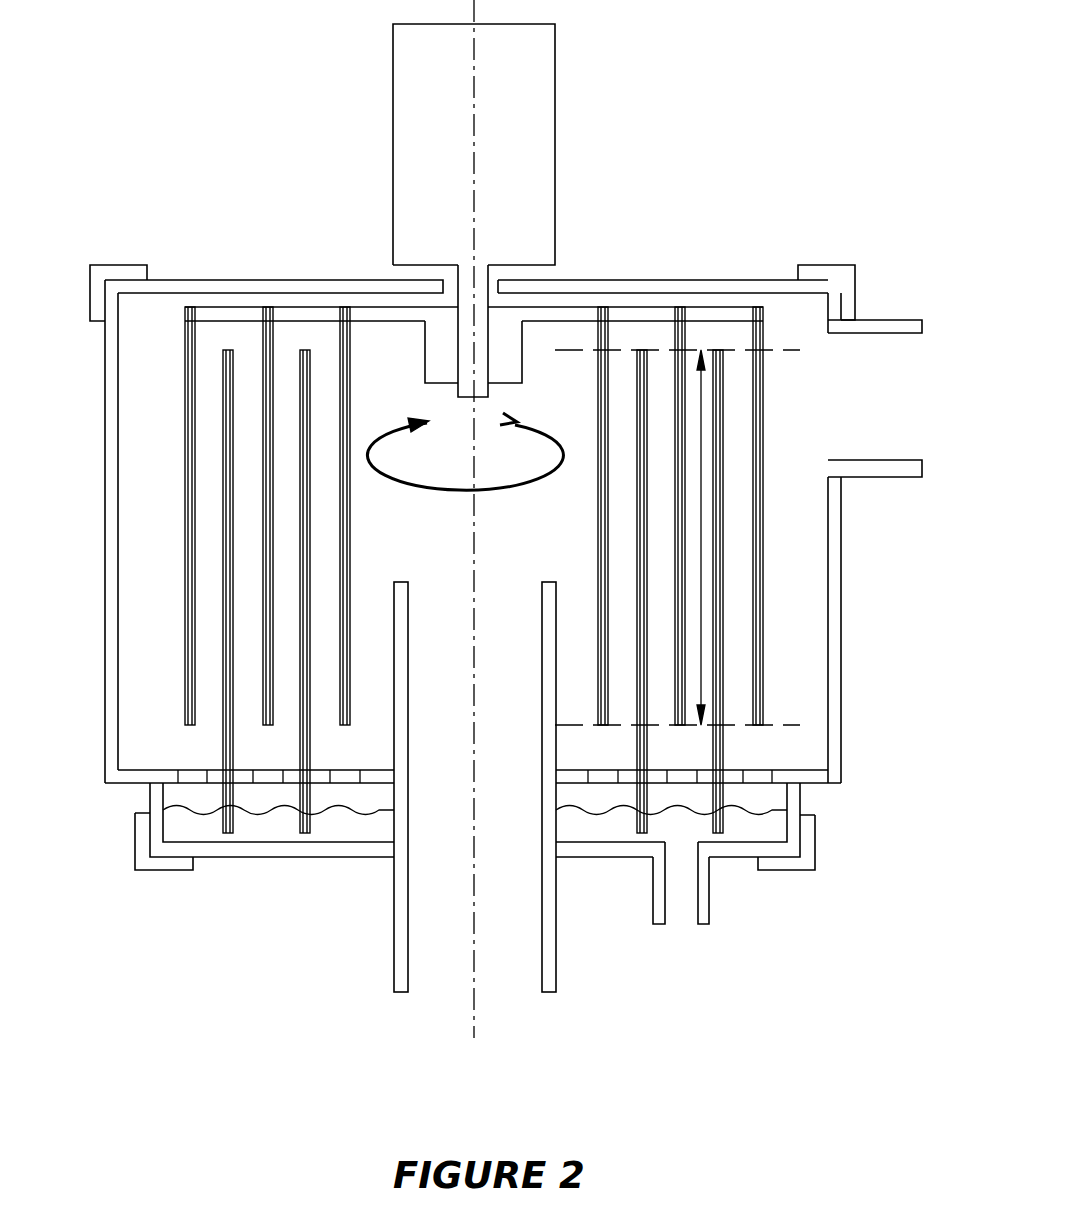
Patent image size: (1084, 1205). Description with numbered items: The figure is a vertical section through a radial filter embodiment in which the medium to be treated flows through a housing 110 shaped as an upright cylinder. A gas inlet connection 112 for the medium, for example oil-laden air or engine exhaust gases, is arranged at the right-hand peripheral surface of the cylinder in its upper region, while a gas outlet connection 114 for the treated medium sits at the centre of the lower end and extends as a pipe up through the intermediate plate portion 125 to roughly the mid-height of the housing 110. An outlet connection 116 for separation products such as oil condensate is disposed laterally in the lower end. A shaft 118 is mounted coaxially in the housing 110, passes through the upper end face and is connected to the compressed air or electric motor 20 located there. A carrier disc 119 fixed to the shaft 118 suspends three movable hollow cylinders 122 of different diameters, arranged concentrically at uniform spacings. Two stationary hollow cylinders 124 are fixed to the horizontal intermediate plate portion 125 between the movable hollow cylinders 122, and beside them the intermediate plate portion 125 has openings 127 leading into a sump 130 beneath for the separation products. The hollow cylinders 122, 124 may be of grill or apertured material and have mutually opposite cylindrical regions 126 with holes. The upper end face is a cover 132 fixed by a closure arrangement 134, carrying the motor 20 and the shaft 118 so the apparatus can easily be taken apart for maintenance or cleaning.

The motor 20 is at (523, 128).
The housing 110 is at (107, 650).
The gas inlet connection 112 is at (878, 398).
The gas outlet connection 114 is at (425, 980).
The outlet connection 116 is at (680, 917).
The shaft 118 is at (478, 280).
The carrier disc 119 is at (631, 305).
The hollow cylinders 122 is at (345, 307).
The stationary hollow cylinders 124 is at (720, 350).
The intermediate plate portion 125 is at (792, 772).
The cylindrical regions 126 is at (702, 592).
The openings 127 is at (762, 780).
The sump 130 is at (280, 832).
The cover 132 is at (221, 292).
The closure arrangement 134 is at (93, 263).